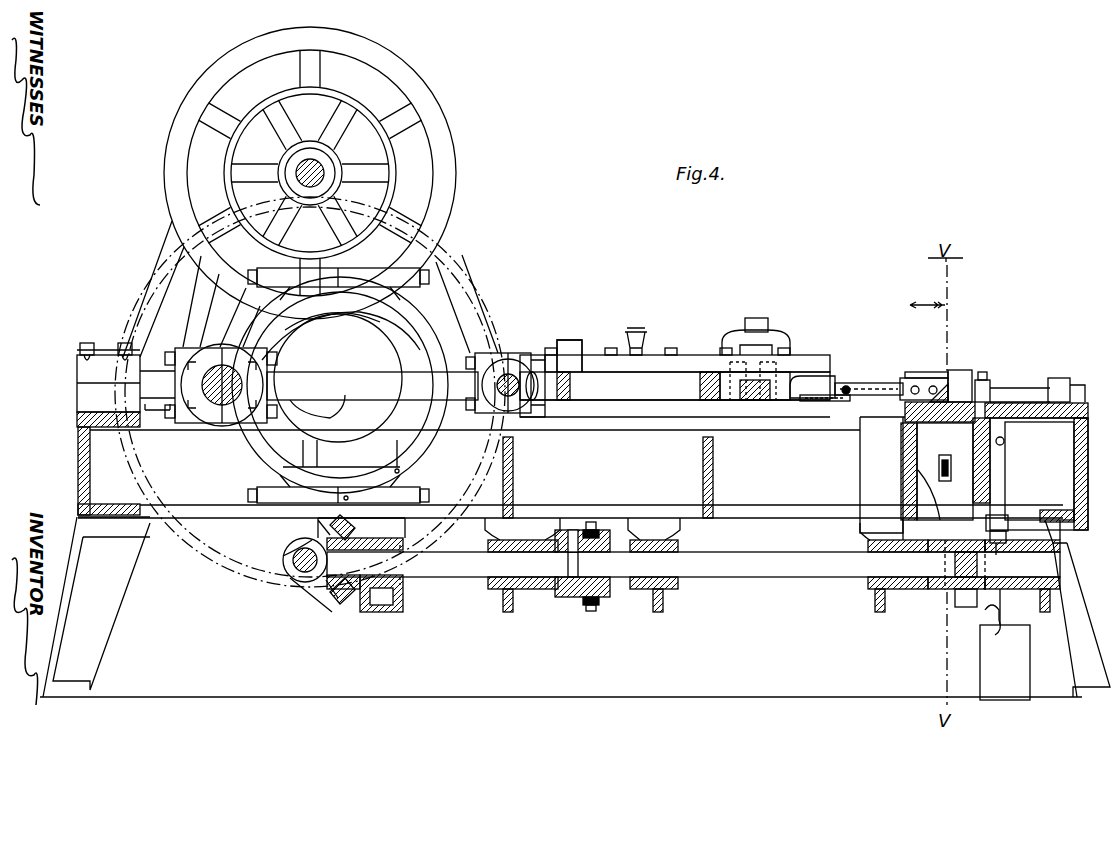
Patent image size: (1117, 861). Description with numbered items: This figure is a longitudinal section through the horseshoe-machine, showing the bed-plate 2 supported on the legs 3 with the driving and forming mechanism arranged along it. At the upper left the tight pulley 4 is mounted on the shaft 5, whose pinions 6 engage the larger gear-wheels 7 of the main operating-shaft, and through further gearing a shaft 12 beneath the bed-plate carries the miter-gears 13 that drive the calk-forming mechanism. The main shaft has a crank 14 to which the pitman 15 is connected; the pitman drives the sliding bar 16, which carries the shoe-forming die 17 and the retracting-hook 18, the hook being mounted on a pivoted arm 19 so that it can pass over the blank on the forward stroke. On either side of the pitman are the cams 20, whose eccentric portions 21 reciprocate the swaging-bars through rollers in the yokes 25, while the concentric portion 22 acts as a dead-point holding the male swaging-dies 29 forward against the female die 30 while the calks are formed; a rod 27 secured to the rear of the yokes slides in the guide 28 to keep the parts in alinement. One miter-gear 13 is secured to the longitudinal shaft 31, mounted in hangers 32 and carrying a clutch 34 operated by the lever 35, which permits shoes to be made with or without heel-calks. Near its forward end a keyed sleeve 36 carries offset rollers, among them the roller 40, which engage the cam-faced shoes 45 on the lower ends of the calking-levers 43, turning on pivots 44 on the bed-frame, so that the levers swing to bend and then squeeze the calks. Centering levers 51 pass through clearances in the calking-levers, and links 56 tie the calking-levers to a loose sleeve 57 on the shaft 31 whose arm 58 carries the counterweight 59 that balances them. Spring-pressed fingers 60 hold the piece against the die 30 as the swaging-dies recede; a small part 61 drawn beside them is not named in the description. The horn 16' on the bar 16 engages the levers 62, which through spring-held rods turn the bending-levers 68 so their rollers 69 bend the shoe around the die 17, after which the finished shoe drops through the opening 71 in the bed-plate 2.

The bed-plate 2 is at (82, 447).
The legs 3 is at (575, 607).
The tight pulley 4 is at (306, 96).
The shaft 5 is at (296, 173).
The pinions 6 is at (315, 142).
The gear-wheels 7 is at (168, 291).
The shaft 12 is at (301, 568).
The miter-gears 13 is at (297, 586).
The crank 14 is at (218, 402).
The pitman 15 is at (372, 386).
The sliding bar 16 is at (675, 372).
The horn or lug 16' is at (569, 355).
The shoe-forming die 17 is at (812, 406).
The retracting-hook 18 is at (862, 406).
The pivoted arm 19 is at (800, 378).
The cams 20 is at (338, 378).
The eccentric portions 21 is at (292, 322).
The concentric portion 22 is at (400, 346).
The yokes 25 is at (440, 332).
The rod 27 is at (157, 390).
The guide 28 is at (108, 377).
The swaging-dies 29 is at (946, 384).
The female swaging-die 30 is at (966, 384).
The longitudinal shaft 31 is at (693, 565).
The hangers 32 is at (500, 588).
The clutch 34 is at (573, 596).
The lever 35 is at (606, 604).
The sleeve 36 is at (923, 590).
The roller 40 is at (948, 593).
The calking-levers 43 is at (945, 469).
The pivots 44 is at (1004, 441).
The cam-faced shoes 45 is at (966, 600).
The centering levers 51 is at (930, 476).
The links 56 is at (1000, 516).
The sleeve 57 is at (991, 590).
The arm 58 is at (1001, 592).
The counterweight 59 is at (999, 628).
The spring-pressed fingers 60 is at (932, 398).
The clamp block 61 is at (922, 392).
The levers 62 is at (735, 350).
The bending-levers 68 is at (1025, 394).
The rollers 69 is at (991, 398).
The opening 71 is at (886, 432).